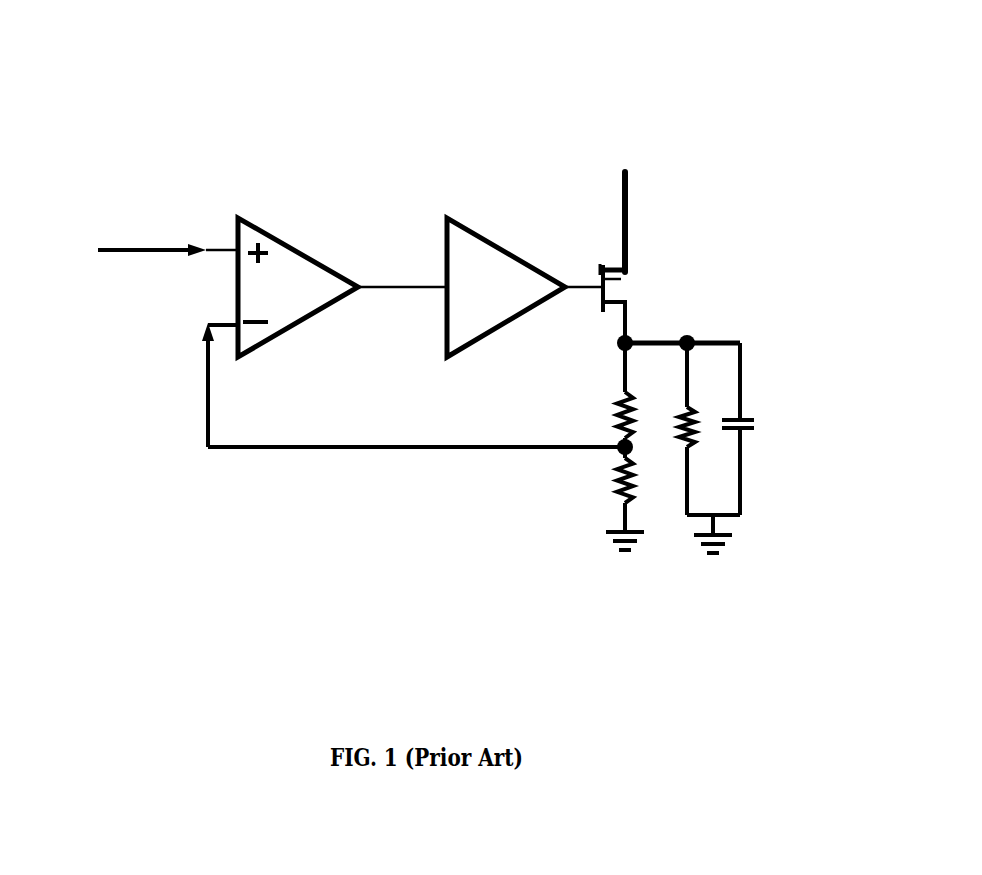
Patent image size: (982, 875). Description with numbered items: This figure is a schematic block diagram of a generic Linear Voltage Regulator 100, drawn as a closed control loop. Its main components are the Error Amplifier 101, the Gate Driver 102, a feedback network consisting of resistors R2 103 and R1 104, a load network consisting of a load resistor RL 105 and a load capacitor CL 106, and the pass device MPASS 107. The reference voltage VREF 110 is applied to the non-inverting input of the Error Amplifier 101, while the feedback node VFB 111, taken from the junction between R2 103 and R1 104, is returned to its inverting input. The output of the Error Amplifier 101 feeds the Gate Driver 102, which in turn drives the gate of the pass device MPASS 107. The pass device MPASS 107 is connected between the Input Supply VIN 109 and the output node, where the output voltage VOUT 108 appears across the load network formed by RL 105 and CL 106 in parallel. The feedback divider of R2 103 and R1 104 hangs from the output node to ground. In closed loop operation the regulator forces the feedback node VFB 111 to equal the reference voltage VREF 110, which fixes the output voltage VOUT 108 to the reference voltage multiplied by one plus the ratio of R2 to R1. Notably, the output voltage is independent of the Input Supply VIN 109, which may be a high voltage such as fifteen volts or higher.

The Linear Voltage Regulator 100 is at (460, 327).
The Error Amplifier 101 is at (304, 229).
The Gate Driver 102 is at (499, 214).
The R2 103 is at (566, 388).
The R1 104 is at (573, 496).
The RL 105 is at (673, 470).
The CL 106 is at (780, 378).
The pass device MPASS 107 is at (652, 257).
The output voltage VOUT 108 is at (741, 297).
The Input Supply VIN 109 is at (607, 119).
The reference voltage VREF 110 is at (80, 207).
The feedback node VFB 111 is at (365, 474).